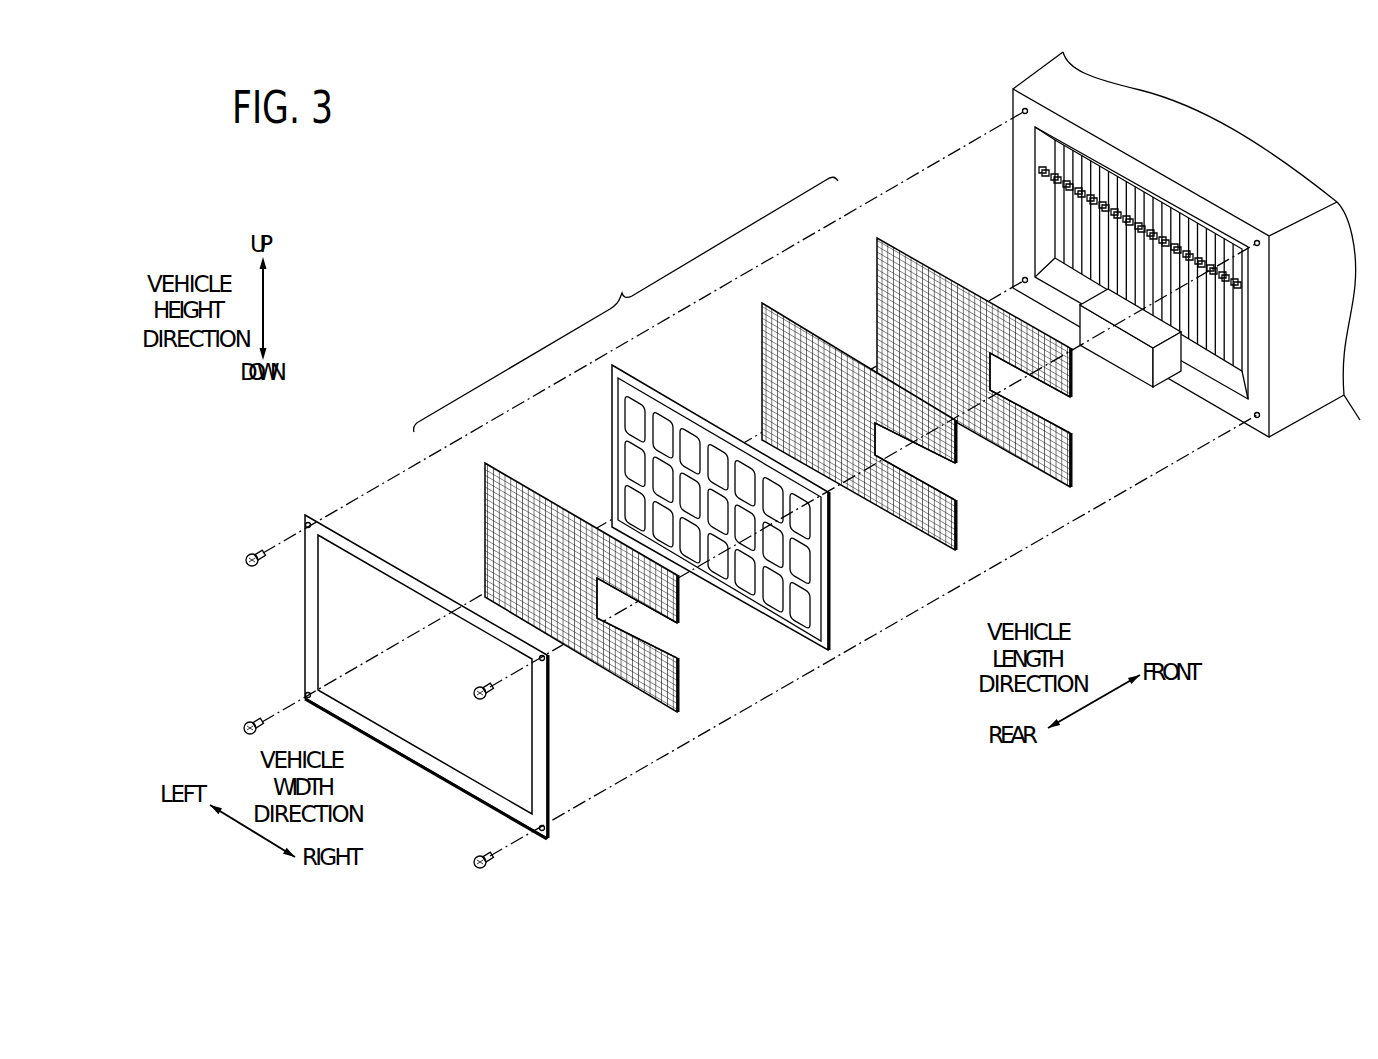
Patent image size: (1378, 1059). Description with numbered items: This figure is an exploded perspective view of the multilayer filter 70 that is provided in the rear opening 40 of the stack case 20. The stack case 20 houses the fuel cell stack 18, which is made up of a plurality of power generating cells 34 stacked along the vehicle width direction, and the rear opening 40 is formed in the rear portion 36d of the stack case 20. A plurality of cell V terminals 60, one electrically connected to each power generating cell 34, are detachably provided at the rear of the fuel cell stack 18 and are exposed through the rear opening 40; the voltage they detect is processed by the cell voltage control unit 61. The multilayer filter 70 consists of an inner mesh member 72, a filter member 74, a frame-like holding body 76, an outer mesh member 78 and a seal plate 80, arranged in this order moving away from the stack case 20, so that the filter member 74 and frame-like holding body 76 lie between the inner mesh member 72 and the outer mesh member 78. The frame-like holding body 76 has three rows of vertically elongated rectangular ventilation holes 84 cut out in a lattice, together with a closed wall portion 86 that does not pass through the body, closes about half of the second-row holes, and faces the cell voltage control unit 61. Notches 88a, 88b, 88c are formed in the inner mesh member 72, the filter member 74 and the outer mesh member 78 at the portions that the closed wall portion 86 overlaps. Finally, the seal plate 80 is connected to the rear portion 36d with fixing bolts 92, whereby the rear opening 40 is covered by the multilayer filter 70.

The stack case 20 is at (1188, 260).
The rear portion 36d is at (1055, 128).
The fuel cell stack 18 is at (1151, 255).
The power generating cells 34 is at (1141, 263).
The rear opening 40 is at (1147, 203).
The cell V terminal 60 is at (1228, 278).
The cell voltage control unit 61 is at (1160, 385).
The multilayer filter 70 is at (626, 304).
The inner mesh member 72 is at (1009, 362).
The filter member 74 is at (889, 426).
The frame-like holding body 76 is at (718, 497).
The outer mesh member 78 is at (608, 587).
The seal plate 80 is at (548, 733).
The ventilation holes 84 is at (657, 422).
The closed wall portion 86 is at (803, 560).
The notch 88a is at (1055, 395).
The notch 88b is at (942, 465).
The notch 88c is at (655, 633).
The fixing bolts 92 is at (245, 565).